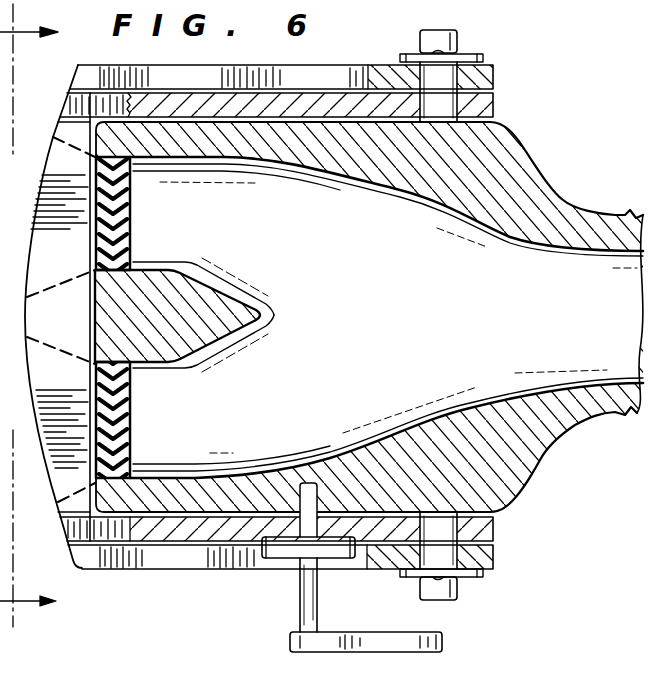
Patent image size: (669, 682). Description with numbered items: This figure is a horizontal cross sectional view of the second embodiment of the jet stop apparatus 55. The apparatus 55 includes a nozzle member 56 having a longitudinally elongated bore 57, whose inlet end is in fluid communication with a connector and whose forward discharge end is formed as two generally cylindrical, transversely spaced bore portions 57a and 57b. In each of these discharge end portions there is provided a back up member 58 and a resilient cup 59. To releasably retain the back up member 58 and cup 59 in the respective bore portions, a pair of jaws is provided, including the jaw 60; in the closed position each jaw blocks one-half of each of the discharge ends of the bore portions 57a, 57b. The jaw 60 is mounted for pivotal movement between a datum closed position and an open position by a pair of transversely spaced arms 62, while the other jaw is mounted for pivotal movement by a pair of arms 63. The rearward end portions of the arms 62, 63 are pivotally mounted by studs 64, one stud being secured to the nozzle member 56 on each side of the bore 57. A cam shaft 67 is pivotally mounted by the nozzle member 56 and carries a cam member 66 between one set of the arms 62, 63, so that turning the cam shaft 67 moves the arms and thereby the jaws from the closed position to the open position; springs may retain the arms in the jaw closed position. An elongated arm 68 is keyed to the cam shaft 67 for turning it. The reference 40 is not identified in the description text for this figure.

The nozzle assembly 40 is at (548, 521).
The jet stop apparatus 55 is at (542, 462).
The nozzle member 56 is at (445, 185).
The longitudinally elongated bore 57 is at (528, 243).
The bore portion 57a is at (150, 268).
The bore portion 57b is at (160, 368).
The back up member 58 is at (130, 462).
The resilient cup 59 is at (125, 434).
The jaw 60 is at (70, 279).
The arms 62 is at (290, 107).
The arms 63 is at (147, 560).
The stud 64 is at (455, 40).
The cam member 66 is at (345, 558).
The cam shaft 67 is at (302, 608).
The elongated arm 68 is at (367, 647).